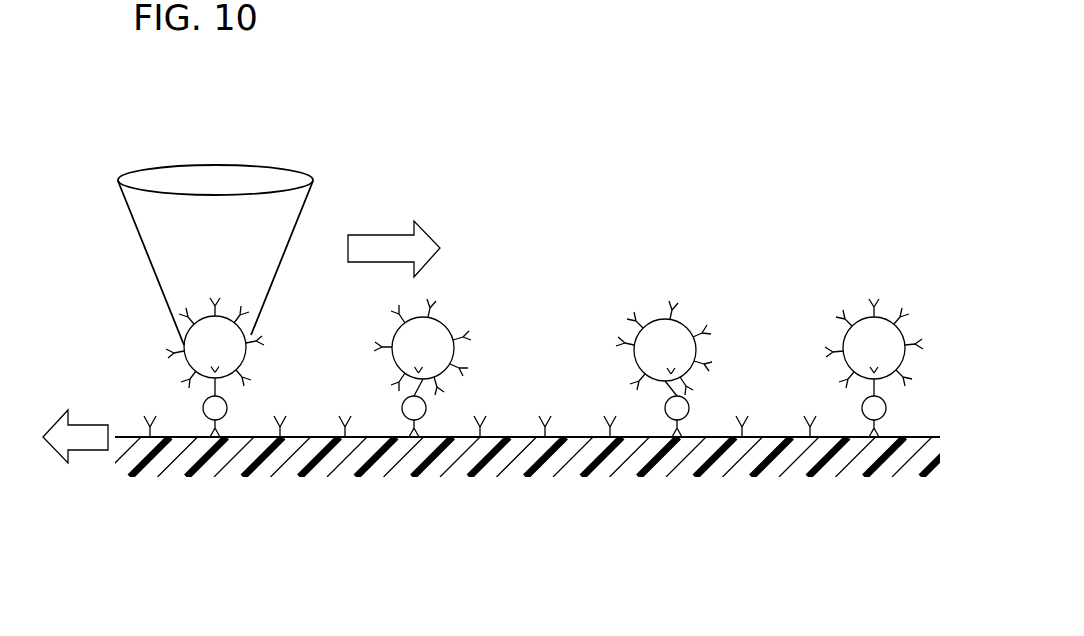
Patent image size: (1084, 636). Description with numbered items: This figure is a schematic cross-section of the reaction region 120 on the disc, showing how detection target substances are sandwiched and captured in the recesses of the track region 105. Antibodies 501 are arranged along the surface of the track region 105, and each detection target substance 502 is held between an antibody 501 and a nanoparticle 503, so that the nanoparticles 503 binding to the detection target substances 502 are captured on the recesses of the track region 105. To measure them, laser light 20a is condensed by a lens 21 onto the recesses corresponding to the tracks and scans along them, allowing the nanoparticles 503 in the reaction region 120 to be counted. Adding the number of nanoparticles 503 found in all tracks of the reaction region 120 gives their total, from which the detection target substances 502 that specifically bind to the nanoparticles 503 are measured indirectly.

The lens 21 is at (148, 177).
The laser light 20a is at (152, 262).
The reaction region 120 is at (598, 242).
The track region 105 is at (883, 462).
The nanoparticle 503 is at (182, 358).
The detection target substance 502 is at (228, 403).
The antibody 501 is at (215, 438).